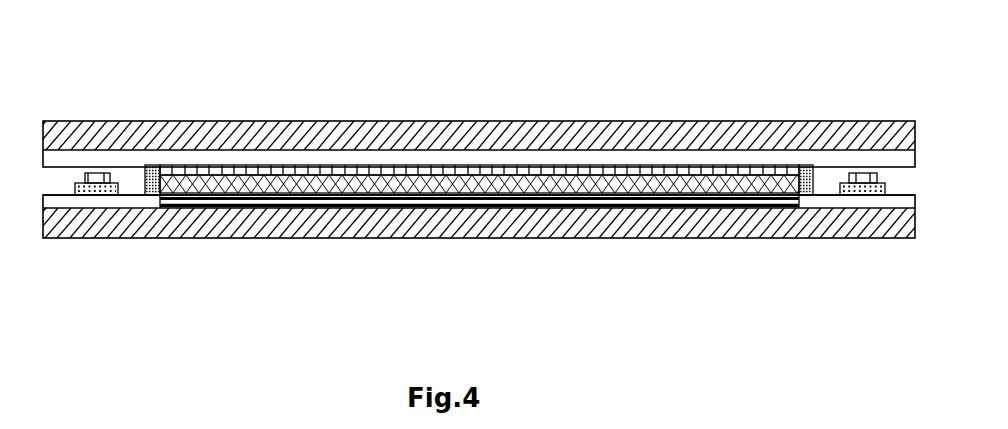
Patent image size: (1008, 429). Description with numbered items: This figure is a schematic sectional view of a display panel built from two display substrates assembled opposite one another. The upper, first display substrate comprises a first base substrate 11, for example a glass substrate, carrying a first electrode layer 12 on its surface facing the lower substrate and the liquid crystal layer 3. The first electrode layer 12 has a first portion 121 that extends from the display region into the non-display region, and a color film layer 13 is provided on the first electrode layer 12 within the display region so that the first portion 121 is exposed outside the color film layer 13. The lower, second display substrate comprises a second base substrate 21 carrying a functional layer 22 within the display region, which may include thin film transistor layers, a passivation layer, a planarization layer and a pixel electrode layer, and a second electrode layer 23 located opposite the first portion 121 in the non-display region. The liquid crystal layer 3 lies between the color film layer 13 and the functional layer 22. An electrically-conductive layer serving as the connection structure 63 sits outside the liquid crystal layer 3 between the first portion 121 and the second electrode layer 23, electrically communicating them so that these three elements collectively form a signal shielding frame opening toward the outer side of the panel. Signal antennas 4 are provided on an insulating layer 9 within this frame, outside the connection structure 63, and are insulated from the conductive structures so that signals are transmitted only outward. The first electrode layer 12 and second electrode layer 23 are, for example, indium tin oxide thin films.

The first base substrate 11 is at (335, 140).
The first portion of the first electrode layer 121 is at (112, 158).
The first electrode layer 12 is at (518, 164).
The color film layer 13 is at (621, 178).
The liquid crystal layer 3 is at (478, 163).
The functional layer 22 is at (313, 202).
The connection structure 63 is at (154, 182).
The insulating layer 9 is at (98, 183).
The signal antennas 4 is at (864, 180).
The second electrode layer 23 is at (73, 200).
The second base substrate 21 is at (534, 225).